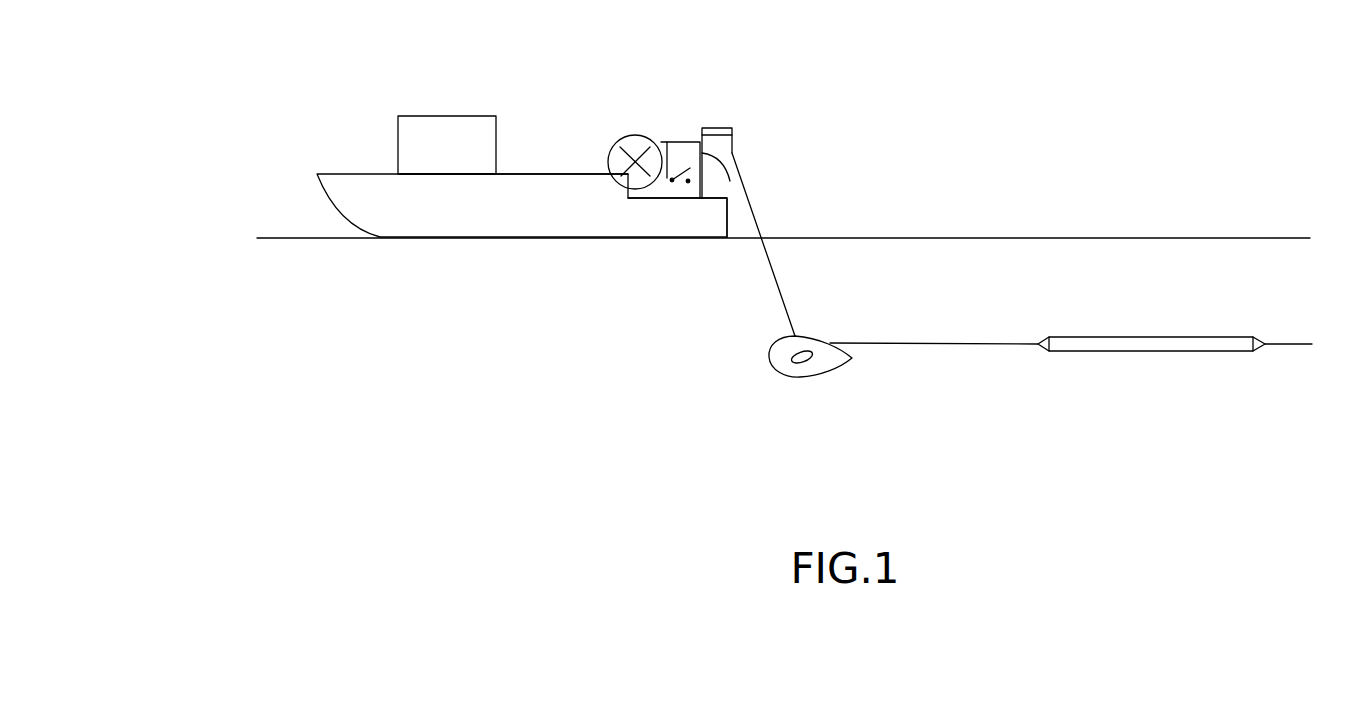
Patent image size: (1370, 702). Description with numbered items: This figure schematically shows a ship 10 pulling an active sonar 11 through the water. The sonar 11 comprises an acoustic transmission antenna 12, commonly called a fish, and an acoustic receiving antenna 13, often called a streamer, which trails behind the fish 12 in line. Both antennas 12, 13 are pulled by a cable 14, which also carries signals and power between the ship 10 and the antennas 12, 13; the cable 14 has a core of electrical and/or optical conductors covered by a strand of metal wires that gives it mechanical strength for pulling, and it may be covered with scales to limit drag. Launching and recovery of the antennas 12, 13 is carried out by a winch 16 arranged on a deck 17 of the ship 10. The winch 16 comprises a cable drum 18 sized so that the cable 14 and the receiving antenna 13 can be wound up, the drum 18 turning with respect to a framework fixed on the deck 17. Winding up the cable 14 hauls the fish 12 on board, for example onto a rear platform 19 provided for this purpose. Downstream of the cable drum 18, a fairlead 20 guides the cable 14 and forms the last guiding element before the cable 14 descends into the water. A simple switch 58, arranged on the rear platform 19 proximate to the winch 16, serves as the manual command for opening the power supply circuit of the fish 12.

The ship 10 is at (478, 227).
The active sonar 11 is at (956, 386).
The acoustic transmission antenna 12 is at (818, 377).
The acoustic receiving antenna 13 is at (1120, 335).
The cable 14 is at (770, 273).
The winch 16 is at (637, 133).
The deck 17 is at (546, 173).
The cable drum 18 is at (635, 161).
The rear platform 19 is at (668, 198).
The fairlead 20 is at (722, 145).
The switch 58 is at (682, 168).